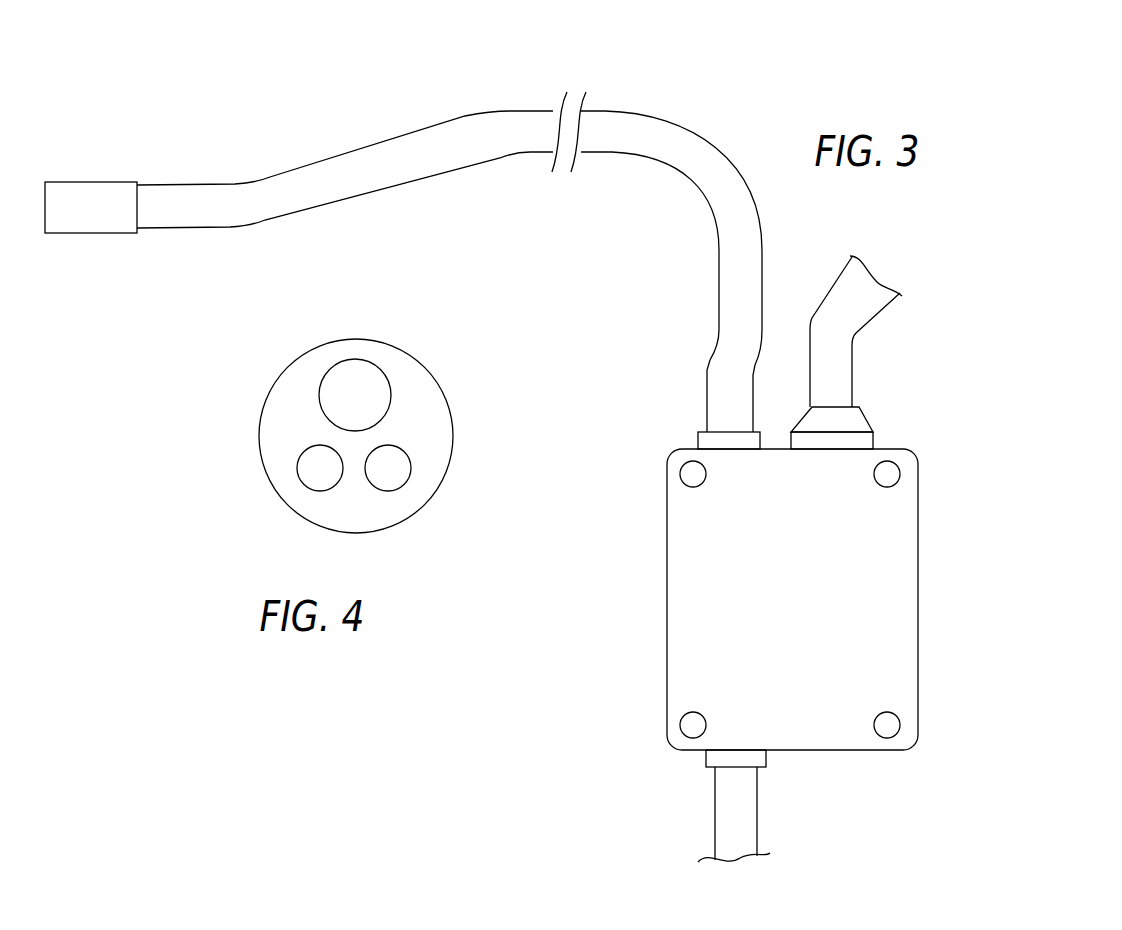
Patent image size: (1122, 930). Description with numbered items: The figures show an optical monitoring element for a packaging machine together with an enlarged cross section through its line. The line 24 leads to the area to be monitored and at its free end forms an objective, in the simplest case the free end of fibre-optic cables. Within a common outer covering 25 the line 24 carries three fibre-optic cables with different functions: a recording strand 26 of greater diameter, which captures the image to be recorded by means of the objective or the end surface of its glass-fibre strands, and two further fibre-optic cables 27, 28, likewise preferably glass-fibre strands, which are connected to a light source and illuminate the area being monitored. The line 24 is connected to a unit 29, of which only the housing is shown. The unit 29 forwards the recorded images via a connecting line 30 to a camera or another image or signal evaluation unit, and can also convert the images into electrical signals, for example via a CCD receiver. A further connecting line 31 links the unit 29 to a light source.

In FIG. 3, the line 24 is at (403, 240).
In FIG. 4, the line 24 is at (323, 411).
In FIG. 3, the outer covering 25 is at (500, 110).
In FIG. 4, the outer covering 25 is at (453, 413).
In FIG. 4, the recording strand 26 is at (373, 375).
In FIG. 4, the fibre-optic cable 27 is at (303, 470).
In FIG. 4, the fibre-optic cable 28 is at (400, 470).
In FIG. 3, the unit 29 is at (938, 556).
In FIG. 3, the connecting line 30 is at (840, 365).
In FIG. 3, the connecting line 31 is at (740, 825).